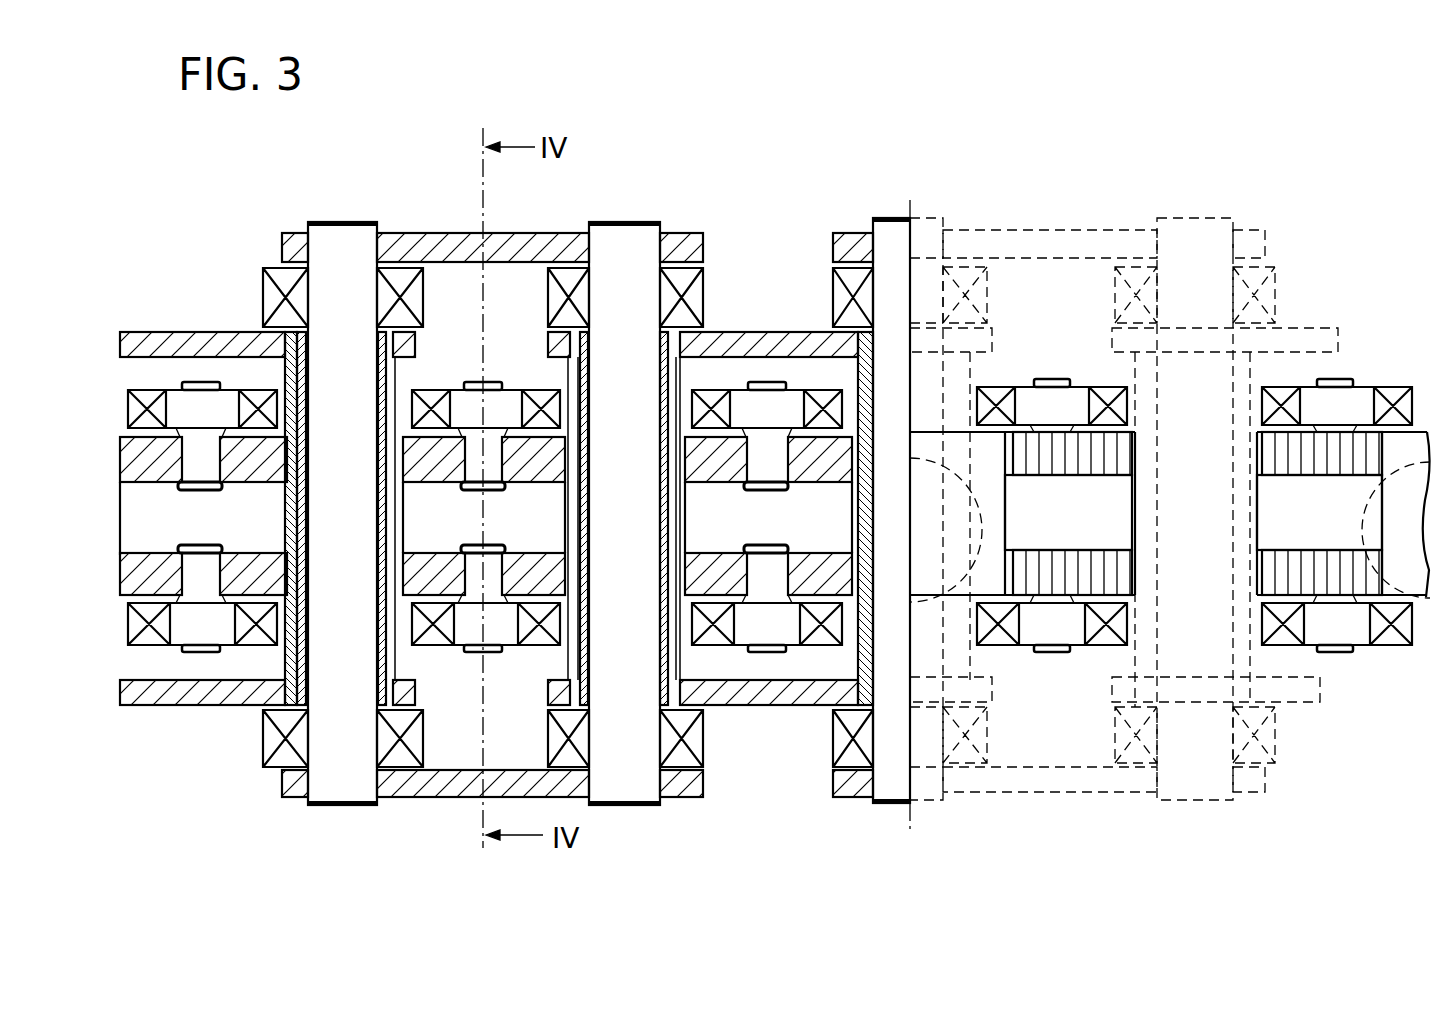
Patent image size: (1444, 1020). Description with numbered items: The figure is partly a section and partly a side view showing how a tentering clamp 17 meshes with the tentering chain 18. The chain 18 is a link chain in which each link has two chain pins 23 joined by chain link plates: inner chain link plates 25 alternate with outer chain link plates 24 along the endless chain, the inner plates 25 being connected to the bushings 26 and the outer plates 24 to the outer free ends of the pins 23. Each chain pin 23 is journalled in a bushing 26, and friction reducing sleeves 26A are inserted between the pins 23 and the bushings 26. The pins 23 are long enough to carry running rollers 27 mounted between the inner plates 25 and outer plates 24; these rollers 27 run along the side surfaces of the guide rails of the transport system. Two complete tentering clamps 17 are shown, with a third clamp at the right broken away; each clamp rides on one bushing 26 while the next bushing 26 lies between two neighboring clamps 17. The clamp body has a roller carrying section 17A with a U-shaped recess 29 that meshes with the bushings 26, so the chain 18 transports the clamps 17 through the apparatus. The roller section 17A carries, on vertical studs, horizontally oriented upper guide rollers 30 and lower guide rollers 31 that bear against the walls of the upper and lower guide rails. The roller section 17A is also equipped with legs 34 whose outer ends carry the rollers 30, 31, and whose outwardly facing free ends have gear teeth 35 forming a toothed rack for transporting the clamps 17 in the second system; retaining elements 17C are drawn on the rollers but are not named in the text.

The tentering clamp 17 is at (115, 600).
The roller carrying section 17A is at (135, 540).
The retaining clip 17C is at (180, 385).
The tentering chain 18 is at (308, 808).
The chain pin 23 is at (325, 240).
The outer chain link plate 24 is at (397, 236).
The inner chain link plate 25 is at (183, 332).
The bushing 26 is at (292, 662).
The friction reducing sleeve 26A is at (300, 390).
The running roller 27 is at (290, 292).
The U-shaped recess 29 is at (405, 522).
The upper guide roller 30 is at (160, 410).
The lower guide roller 31 is at (262, 622).
The leg 34 is at (1103, 600).
The gear teeth 35 is at (1038, 598).